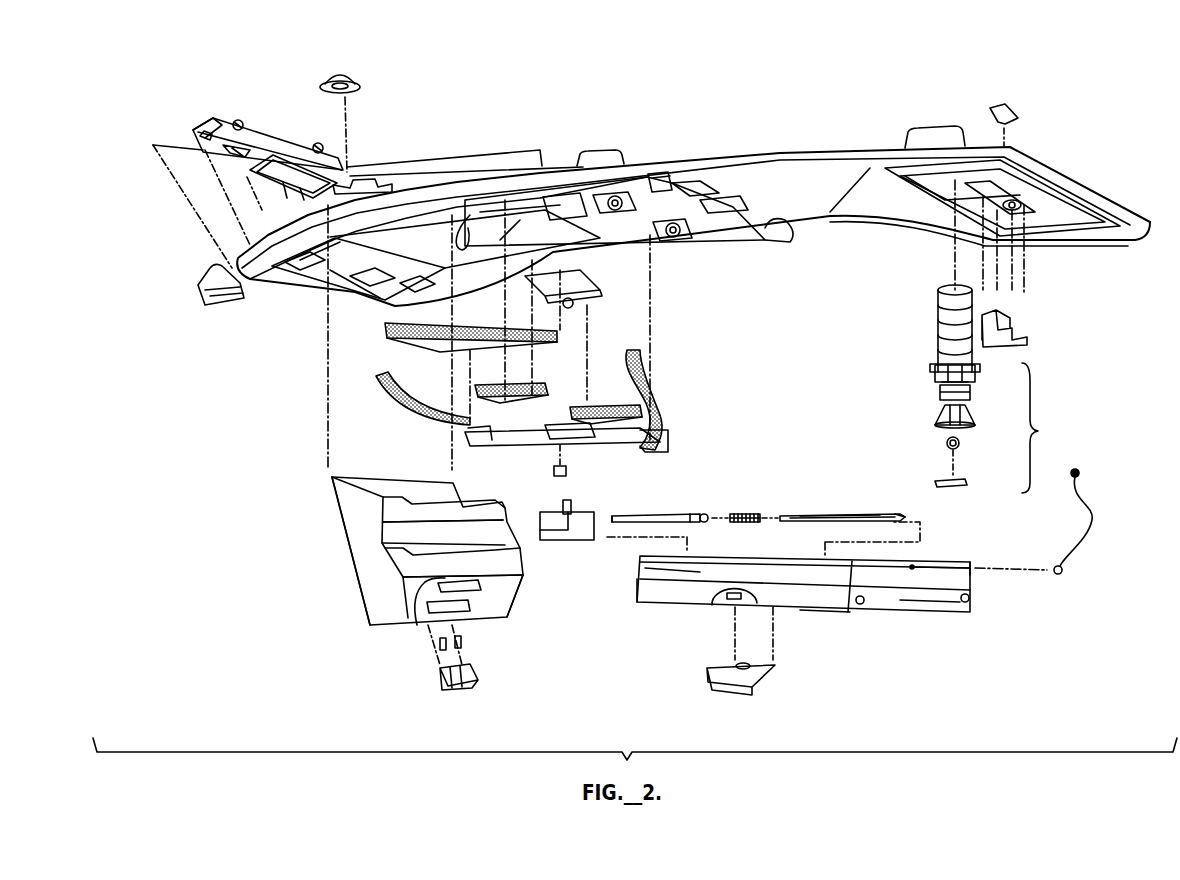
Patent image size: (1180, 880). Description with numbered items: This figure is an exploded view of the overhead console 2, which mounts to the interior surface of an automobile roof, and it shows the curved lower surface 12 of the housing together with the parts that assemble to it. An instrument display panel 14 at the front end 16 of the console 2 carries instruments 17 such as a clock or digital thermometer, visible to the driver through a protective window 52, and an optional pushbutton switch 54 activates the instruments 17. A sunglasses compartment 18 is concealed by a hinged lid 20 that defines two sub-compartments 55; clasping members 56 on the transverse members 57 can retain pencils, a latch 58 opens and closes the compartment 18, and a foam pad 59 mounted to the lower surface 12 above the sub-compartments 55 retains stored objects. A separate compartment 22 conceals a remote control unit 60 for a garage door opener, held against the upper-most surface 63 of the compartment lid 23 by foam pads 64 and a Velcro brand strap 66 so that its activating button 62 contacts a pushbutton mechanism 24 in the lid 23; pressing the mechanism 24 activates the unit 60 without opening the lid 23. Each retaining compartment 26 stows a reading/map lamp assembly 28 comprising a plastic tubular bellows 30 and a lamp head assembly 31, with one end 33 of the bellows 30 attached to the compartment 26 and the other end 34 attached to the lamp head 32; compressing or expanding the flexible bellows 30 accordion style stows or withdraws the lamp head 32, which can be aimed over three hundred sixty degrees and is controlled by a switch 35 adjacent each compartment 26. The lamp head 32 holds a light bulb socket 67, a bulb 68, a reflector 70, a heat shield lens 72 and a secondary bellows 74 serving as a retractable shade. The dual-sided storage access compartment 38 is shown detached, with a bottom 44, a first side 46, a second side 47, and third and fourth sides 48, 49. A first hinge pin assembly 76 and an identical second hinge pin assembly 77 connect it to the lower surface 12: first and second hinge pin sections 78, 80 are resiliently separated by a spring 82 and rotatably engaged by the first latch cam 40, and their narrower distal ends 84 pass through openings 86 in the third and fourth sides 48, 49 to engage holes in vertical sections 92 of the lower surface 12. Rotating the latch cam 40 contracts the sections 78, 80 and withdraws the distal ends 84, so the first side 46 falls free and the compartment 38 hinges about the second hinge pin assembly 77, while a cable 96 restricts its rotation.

The overhead console 2 is at (797, 75).
The lower surface 12 is at (742, 252).
The instrument display panel 14 is at (318, 265).
The front end 16 is at (216, 247).
The instruments 17 is at (268, 170).
The compartment 18 is at (344, 560).
The hinged lid 20 is at (615, 240).
The compartment 22 is at (460, 240).
The compartment lid 23 is at (528, 446).
The pushbutton mechanism 24 is at (578, 540).
The retaining compartment 26 is at (945, 180).
The reading/map lamp assembly 28 is at (1074, 383).
The plastic tubular bellows 30 is at (938, 332).
The lamp head assembly 31 is at (1041, 428).
The lamp head 32 is at (936, 364).
The bulb 33 is at (938, 290).
The end of bellows 34 is at (978, 368).
The switch 35 is at (1033, 338).
The dual-sided storage access compartment 38 is at (896, 616).
The first latch-cam 40 is at (662, 184).
The bottom 44 is at (830, 618).
The first side 46 is at (660, 572).
The second side 47 is at (973, 576).
The third side 48 is at (636, 590).
The fourth side 49 is at (928, 602).
The protective window 52 is at (352, 300).
The pushbutton switch 54 is at (206, 296).
The sub-compartments 55 is at (462, 504).
The clasping members 56 is at (420, 618).
The transverse members 57 is at (502, 610).
The latch 58 is at (473, 684).
The foam pad 59 is at (440, 344).
The remote control unit 60 is at (588, 292).
The activating button 62 is at (580, 304).
The upper-most surface 63 is at (668, 434).
The foam pads 64 is at (507, 388).
The Velcro brand strap 66 is at (428, 420).
The light bulb socket 67 is at (970, 381).
The light bulb 68 is at (946, 443).
The reflector 70 is at (944, 408).
The heat shield lens 72 is at (957, 487).
The secondary bellows 74 is at (940, 387).
The first hinge pin assembly 76 is at (807, 509).
The second hinge pin assembly 77 is at (979, 564).
The first hinge pin section 78 is at (686, 516).
The second hinge pin section 80 is at (822, 522).
The spring 82 is at (741, 513).
The distal ends 84 is at (615, 514).
The openings 86 is at (862, 605).
The vertical sections 92 is at (780, 228).
The cable 96 is at (1085, 512).